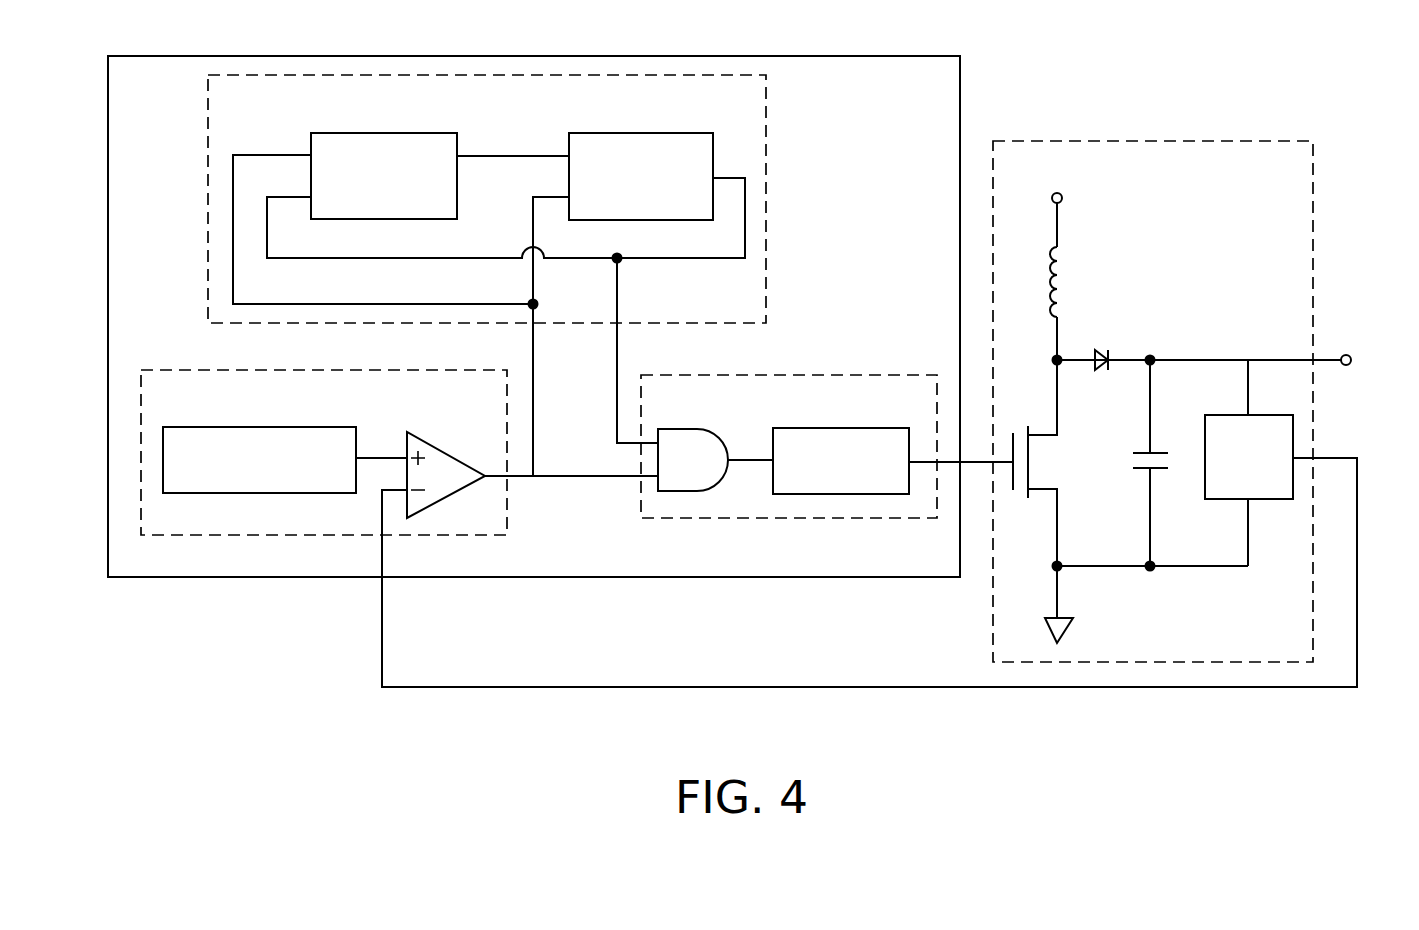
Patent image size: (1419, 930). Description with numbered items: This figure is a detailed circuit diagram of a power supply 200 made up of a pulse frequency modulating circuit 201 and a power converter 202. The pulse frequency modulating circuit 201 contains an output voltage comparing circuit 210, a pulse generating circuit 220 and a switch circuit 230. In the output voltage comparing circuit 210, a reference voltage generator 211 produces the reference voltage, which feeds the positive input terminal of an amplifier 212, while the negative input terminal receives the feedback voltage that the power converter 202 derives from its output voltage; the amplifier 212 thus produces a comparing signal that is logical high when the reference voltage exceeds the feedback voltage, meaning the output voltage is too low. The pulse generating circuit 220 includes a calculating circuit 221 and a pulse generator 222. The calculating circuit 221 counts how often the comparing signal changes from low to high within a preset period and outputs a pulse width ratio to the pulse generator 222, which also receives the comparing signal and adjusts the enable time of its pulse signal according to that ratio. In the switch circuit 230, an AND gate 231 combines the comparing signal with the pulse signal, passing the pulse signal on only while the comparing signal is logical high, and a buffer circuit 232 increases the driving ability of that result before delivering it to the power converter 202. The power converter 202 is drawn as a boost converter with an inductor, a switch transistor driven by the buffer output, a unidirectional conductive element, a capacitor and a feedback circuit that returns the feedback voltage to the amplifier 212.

The power supply 200 is at (1383, 759).
The pulse frequency modulating circuit 201 is at (767, 577).
The power converter 202 is at (1313, 208).
The output voltage comparing circuit 210 is at (193, 370).
The reference voltage generator 211 is at (260, 427).
The amplifier 212 is at (448, 448).
The pulse generating circuit 220 is at (766, 157).
The calculating circuit 221 is at (385, 133).
The pulse generator 222 is at (643, 133).
The switch circuit 230 is at (848, 375).
The AND gate 231 is at (681, 429).
The buffer circuit 232 is at (843, 428).